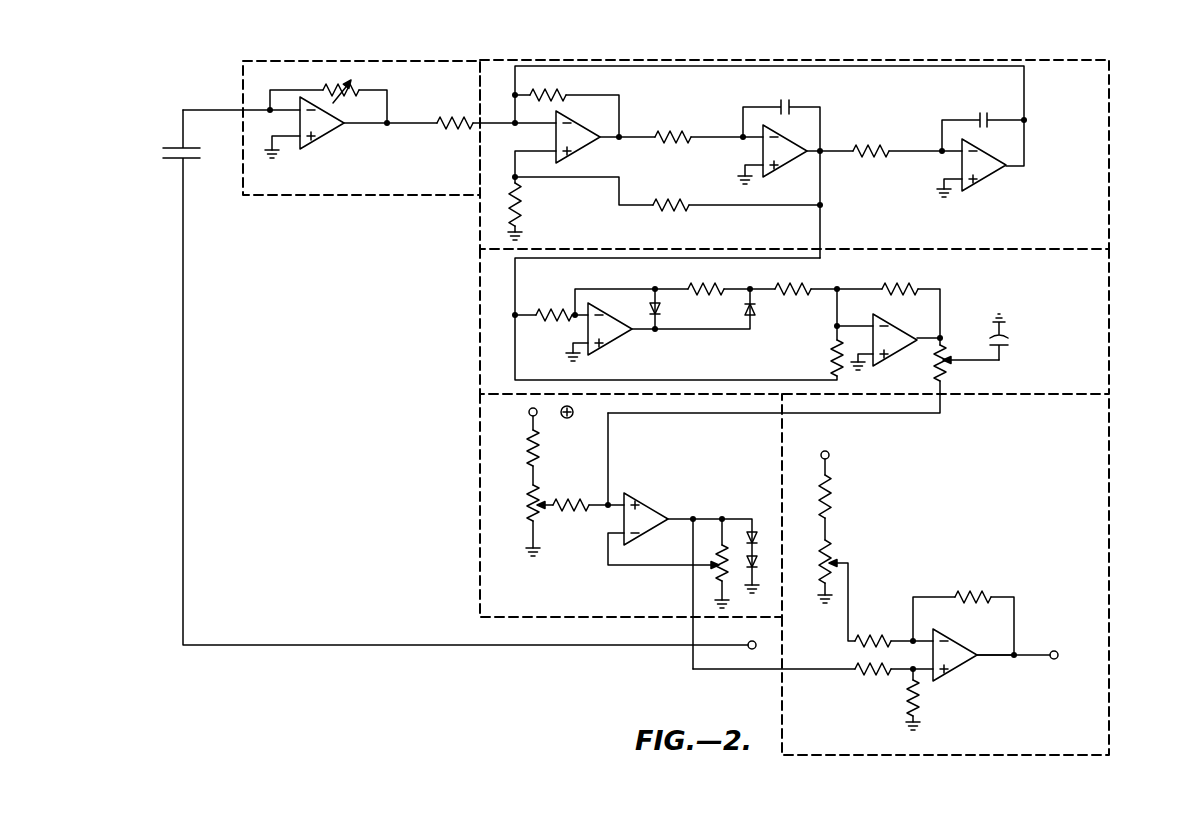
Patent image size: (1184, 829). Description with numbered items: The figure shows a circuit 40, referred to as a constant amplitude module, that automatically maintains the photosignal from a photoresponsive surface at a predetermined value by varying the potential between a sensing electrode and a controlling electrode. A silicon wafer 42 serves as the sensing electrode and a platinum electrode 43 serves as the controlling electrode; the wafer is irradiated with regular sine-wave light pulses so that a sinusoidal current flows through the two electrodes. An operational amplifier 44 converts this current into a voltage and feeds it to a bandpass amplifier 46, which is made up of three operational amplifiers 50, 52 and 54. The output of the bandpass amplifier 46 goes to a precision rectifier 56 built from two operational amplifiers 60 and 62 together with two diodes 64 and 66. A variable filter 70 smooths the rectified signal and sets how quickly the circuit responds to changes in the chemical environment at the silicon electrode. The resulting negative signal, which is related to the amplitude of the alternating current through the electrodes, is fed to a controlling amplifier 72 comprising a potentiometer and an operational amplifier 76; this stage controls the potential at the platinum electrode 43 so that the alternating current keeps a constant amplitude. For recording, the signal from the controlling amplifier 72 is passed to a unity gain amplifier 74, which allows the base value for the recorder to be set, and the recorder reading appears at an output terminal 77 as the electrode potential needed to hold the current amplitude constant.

The circuit 40 is at (676, 395).
The silicon wafer 42 is at (171, 146).
The platinum electrode 43 is at (172, 160).
The operational amplifier 44 is at (436, 67).
The bandpass amplifier 46 is at (794, 146).
The operational amplifier 50 is at (590, 114).
The operational amplifier 52 is at (795, 124).
The operational amplifier 54 is at (984, 146).
The precision rectifier 56 is at (816, 331).
The operational amplifier 60 is at (615, 320).
The operational amplifier 62 is at (901, 323).
The diode 64 is at (664, 312).
The diode 66 is at (758, 312).
The variable filter 70 is at (1012, 330).
The controlling amplifier 72 is at (611, 531).
The unity gain amplifier 74 is at (847, 574).
The operational amplifier 76 is at (640, 508).
The output terminal 77 is at (1058, 652).